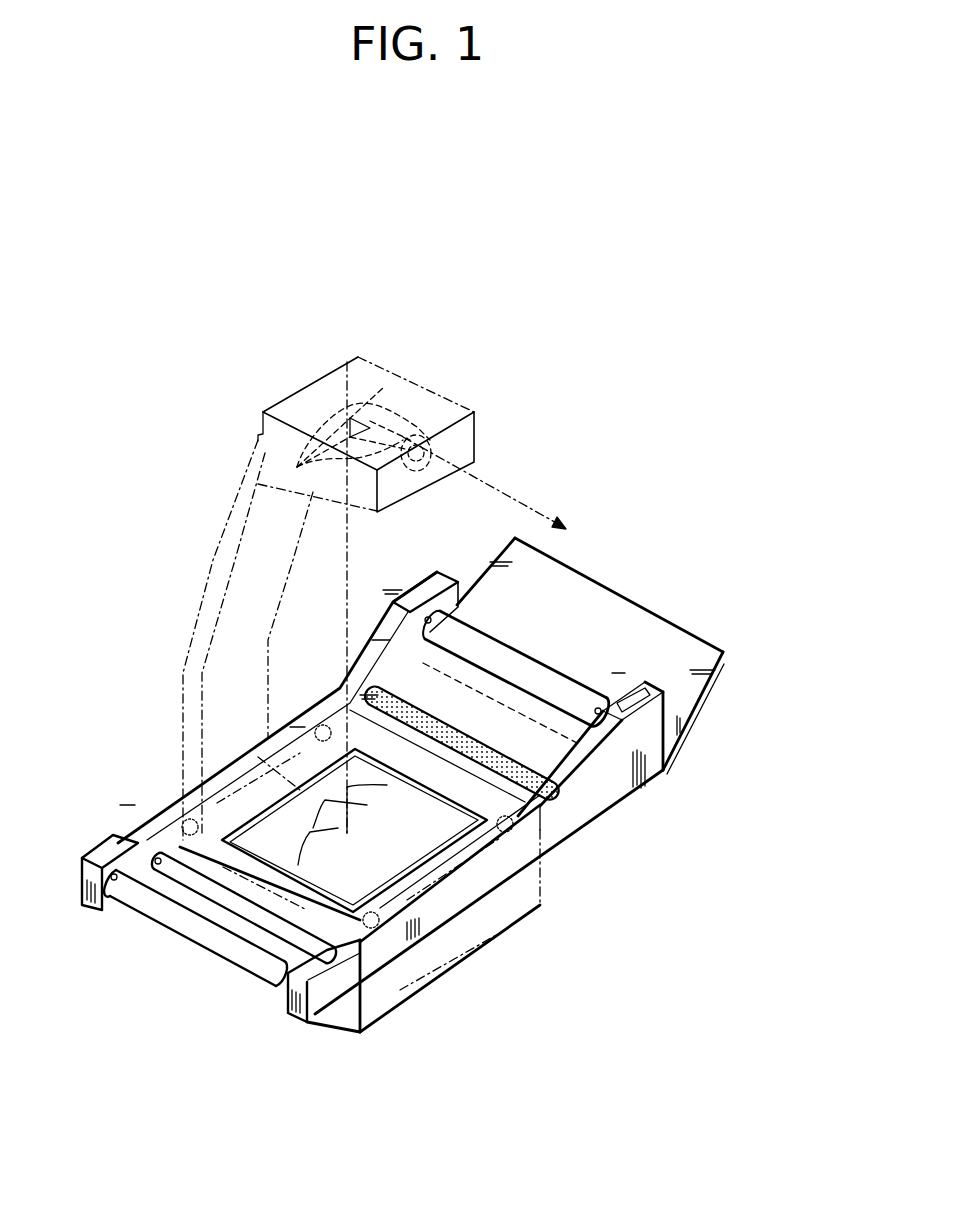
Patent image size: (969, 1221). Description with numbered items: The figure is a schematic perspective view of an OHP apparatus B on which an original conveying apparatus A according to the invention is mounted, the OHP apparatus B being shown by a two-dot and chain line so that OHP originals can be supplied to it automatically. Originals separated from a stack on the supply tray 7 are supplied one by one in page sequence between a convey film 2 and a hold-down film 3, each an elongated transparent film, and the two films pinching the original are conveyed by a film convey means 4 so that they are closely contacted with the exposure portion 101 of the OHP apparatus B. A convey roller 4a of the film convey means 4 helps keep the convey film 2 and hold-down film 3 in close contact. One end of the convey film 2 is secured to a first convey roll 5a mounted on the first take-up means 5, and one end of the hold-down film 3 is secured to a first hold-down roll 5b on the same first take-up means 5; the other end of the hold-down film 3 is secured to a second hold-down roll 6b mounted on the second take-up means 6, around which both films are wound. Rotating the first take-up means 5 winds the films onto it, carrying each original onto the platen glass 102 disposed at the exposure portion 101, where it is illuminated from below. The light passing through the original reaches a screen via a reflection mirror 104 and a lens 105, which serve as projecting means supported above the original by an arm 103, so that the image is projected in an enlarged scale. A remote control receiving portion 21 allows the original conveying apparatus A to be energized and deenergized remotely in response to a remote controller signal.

The convey film 2 is at (478, 858).
The hold-down film 3 is at (402, 862).
The film convey means 4 is at (567, 825).
The convey roller 4a is at (398, 690).
The first take-up means 5 is at (172, 951).
The first convey roll 5a is at (148, 900).
The first hold-down roll 5b is at (272, 918).
The second take-up means 6 is at (660, 790).
The second hold-down roll 6b is at (530, 662).
The supply tray 7 is at (703, 685).
The remote control receiving portion 21 is at (632, 703).
The exposure portion 101 is at (387, 1000).
The platen glass 102 is at (282, 797).
The arm 103 is at (263, 546).
The reflection mirror 104 is at (347, 370).
The lens 105 is at (433, 391).
The original conveying apparatus A is at (315, 1025).
The OHP apparatus B is at (198, 463).